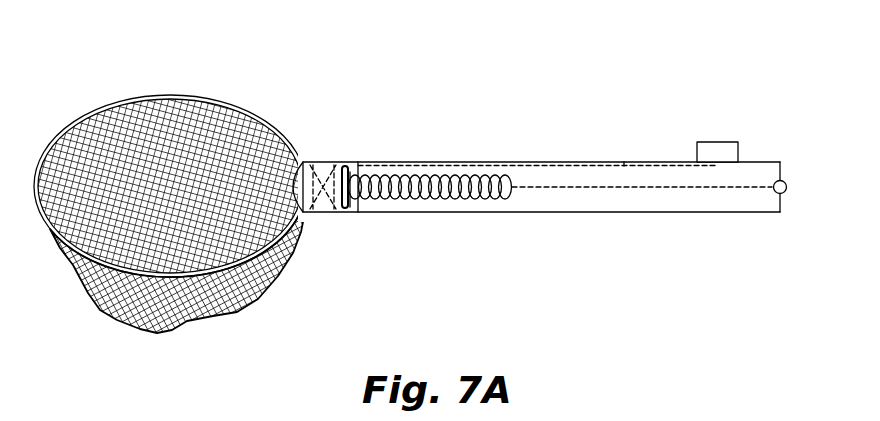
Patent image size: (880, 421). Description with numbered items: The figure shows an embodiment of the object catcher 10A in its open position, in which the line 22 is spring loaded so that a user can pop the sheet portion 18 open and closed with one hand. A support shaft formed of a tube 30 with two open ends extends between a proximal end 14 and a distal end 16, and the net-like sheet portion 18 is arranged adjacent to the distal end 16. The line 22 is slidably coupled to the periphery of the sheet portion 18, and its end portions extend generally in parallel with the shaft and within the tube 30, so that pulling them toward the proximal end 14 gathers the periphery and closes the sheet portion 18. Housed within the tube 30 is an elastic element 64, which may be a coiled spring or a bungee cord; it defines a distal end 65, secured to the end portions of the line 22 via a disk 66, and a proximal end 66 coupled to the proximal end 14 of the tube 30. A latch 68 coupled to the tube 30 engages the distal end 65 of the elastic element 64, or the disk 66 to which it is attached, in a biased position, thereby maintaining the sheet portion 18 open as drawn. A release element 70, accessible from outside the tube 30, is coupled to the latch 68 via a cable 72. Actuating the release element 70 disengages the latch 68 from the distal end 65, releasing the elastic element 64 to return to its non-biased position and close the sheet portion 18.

The object catcher 10A is at (470, 76).
The proximal end 14 is at (781, 171).
The distal end 16 is at (303, 160).
The sheet portion 18 is at (127, 313).
The line 22 is at (333, 161).
The tube 30 is at (762, 162).
The elastic element 64 is at (503, 175).
The distal end 65 is at (352, 209).
The disk 66 is at (788, 193).
The latch 68 is at (357, 162).
The release element 70 is at (718, 142).
The cable 72 is at (624, 162).